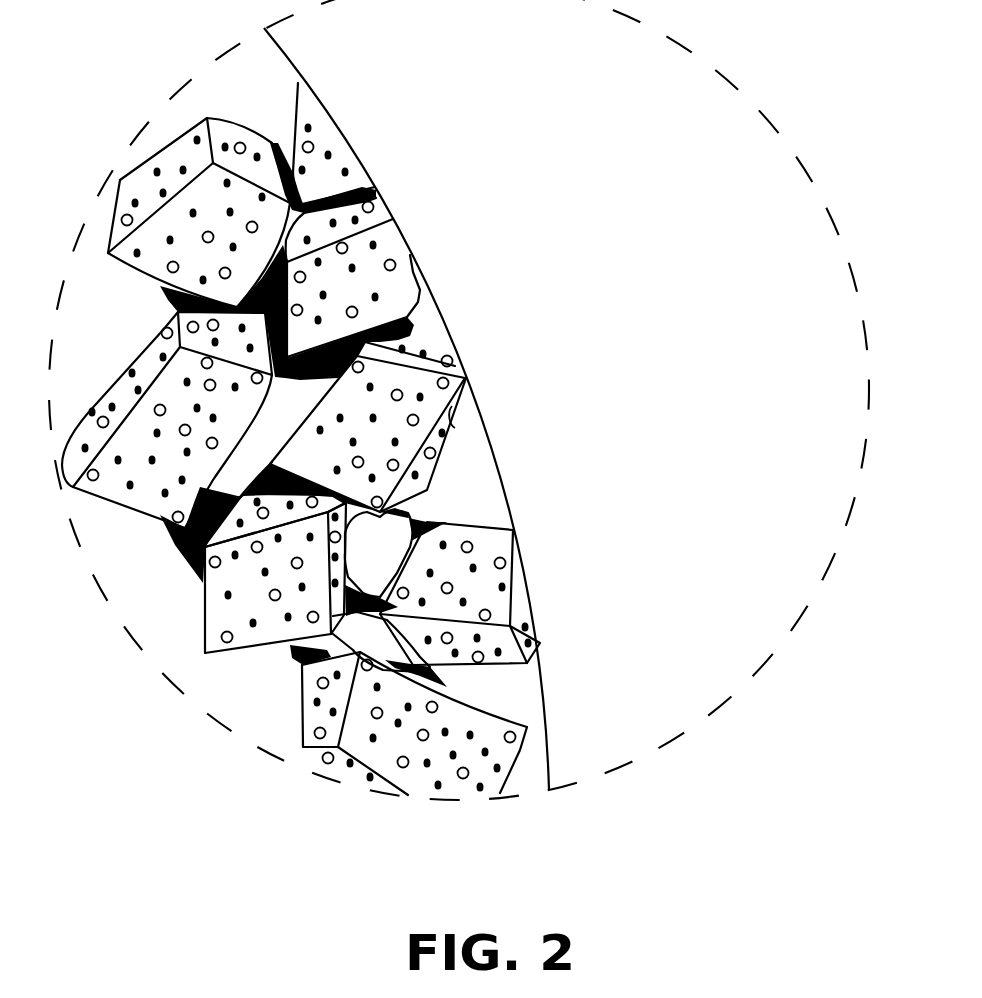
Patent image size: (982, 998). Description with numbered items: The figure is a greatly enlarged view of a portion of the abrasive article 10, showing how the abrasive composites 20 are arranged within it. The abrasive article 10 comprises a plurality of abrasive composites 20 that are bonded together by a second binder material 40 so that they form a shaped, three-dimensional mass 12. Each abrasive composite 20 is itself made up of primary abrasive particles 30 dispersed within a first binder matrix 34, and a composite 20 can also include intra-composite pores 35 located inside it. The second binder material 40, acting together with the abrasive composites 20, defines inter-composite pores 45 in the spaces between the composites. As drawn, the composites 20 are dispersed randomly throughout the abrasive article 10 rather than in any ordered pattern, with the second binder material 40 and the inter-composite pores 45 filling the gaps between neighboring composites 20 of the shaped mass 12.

The abrasive article 10 is at (467, 80).
The shaped, three-dimensional mass 12 is at (279, 47).
The abrasive composite 20 is at (488, 528).
The primary abrasive particle 30 is at (432, 348).
The first binder matrix 34 is at (456, 428).
The intra-composite pore 35 is at (503, 563).
The second binder material 40 is at (447, 356).
The inter-composite pore 45 is at (322, 196).